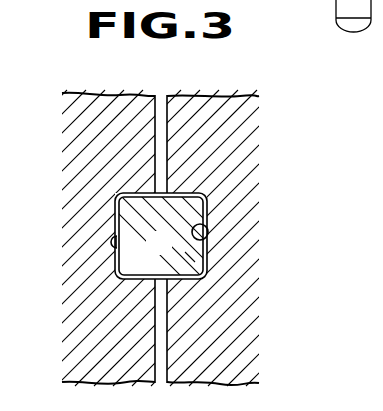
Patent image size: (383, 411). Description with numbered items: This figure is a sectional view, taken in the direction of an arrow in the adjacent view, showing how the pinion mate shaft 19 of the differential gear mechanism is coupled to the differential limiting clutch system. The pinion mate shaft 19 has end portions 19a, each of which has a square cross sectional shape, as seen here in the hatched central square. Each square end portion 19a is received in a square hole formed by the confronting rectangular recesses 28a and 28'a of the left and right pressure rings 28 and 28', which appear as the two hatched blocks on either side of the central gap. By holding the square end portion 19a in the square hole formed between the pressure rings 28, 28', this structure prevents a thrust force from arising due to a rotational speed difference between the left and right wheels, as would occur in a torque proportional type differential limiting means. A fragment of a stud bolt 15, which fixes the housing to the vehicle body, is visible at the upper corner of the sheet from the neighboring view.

The pressure ring 28 is at (191, 238).
The pressure ring 28' is at (191, 238).
The rectangular recess 28a is at (113, 253).
The rectangular recess 28'a is at (268, 214).
The pinion mate shaft 19 is at (170, 254).
The end portion 19a is at (187, 260).
The stud bolt 15 is at (316, 0).